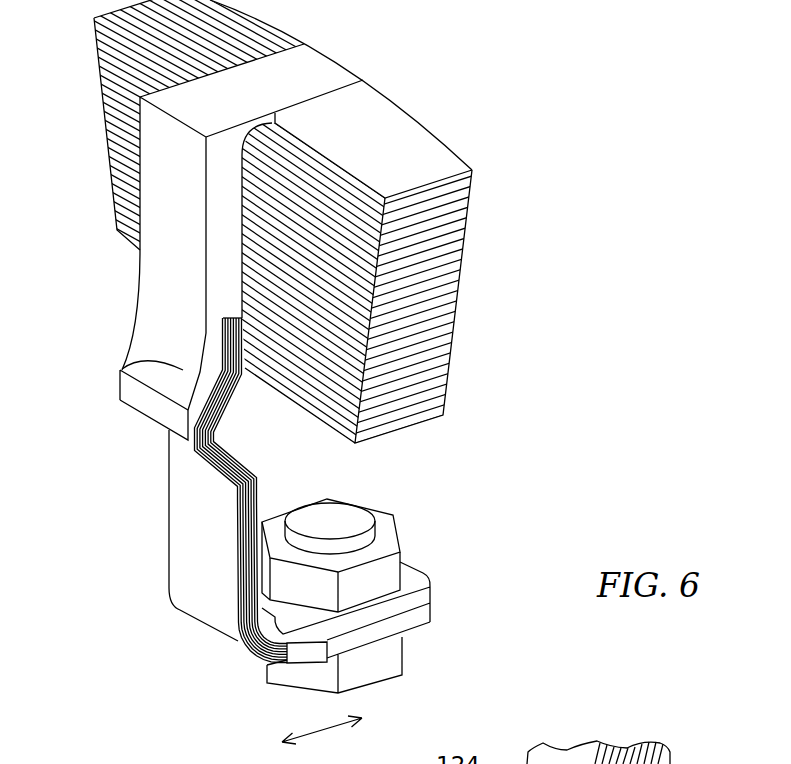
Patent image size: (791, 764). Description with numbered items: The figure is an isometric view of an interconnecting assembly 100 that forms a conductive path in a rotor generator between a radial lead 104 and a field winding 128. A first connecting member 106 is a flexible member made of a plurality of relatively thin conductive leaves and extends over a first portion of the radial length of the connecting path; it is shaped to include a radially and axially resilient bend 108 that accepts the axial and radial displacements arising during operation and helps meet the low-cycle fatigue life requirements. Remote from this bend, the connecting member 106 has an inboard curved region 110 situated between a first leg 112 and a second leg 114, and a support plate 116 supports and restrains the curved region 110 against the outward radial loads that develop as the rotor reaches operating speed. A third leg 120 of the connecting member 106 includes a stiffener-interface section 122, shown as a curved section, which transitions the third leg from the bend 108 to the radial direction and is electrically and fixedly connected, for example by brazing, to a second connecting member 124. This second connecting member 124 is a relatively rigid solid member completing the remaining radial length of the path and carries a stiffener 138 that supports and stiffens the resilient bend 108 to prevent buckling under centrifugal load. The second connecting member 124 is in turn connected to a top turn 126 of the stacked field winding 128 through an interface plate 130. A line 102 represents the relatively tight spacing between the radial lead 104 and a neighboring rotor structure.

The interconnecting assembly 100 is at (120, 471).
The line 102 is at (290, 722).
The radial lead 104 is at (340, 522).
The first connecting member 106 is at (168, 524).
The resilient bend 108 is at (222, 437).
The inboard curved region 110 is at (222, 637).
The first leg 112 is at (420, 627).
The second leg 114 is at (168, 561).
The support plate 116 is at (423, 568).
The third leg 120 is at (226, 418).
The stiffener-interface section 122 is at (132, 356).
The second connecting member 124 is at (132, 327).
The top turn 126 is at (415, 120).
The field winding 128 is at (465, 243).
The interface plate 130 is at (303, 75).
The stiffener 138 is at (150, 398).